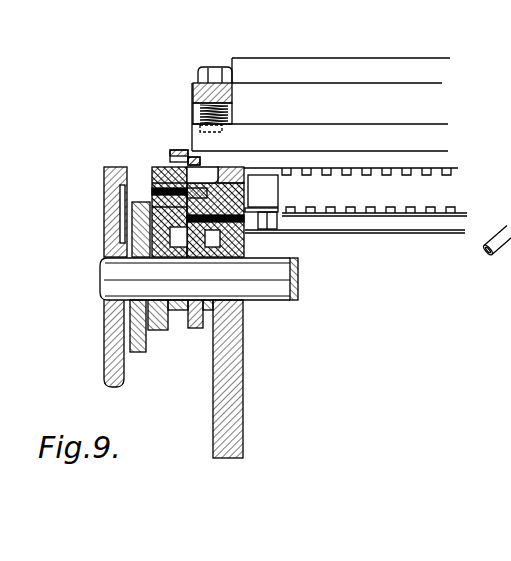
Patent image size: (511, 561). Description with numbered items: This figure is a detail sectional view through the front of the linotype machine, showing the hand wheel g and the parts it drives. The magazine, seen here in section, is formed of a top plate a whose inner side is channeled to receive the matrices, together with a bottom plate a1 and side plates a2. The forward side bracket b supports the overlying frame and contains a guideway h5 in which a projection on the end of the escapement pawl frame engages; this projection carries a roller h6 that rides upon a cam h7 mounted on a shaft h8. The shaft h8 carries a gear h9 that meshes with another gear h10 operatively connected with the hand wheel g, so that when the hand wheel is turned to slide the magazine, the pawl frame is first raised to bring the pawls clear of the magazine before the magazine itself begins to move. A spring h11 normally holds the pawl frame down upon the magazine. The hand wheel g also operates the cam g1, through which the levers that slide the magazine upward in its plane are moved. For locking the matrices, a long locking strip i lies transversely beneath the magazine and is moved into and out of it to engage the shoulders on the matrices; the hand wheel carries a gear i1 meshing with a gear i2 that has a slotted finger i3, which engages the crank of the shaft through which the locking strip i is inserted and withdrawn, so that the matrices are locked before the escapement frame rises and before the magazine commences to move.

The plate a is at (445, 172).
The bottom plate a1 is at (450, 213).
The side plates a2 is at (265, 198).
The forward side brackets b is at (242, 365).
The hand wheel g is at (108, 225).
The cam g1 is at (108, 193).
The guideways h5 is at (187, 150).
The rollers h6 is at (178, 152).
The cams h7 is at (168, 167).
The shaft h8 is at (140, 180).
The gear h9 is at (147, 180).
The gear h10 is at (150, 330).
The springs h11 is at (220, 115).
The locking strip i is at (372, 232).
The gear i1 is at (190, 327).
The gear i2 is at (238, 168).
The slotted finger i3 is at (252, 230).